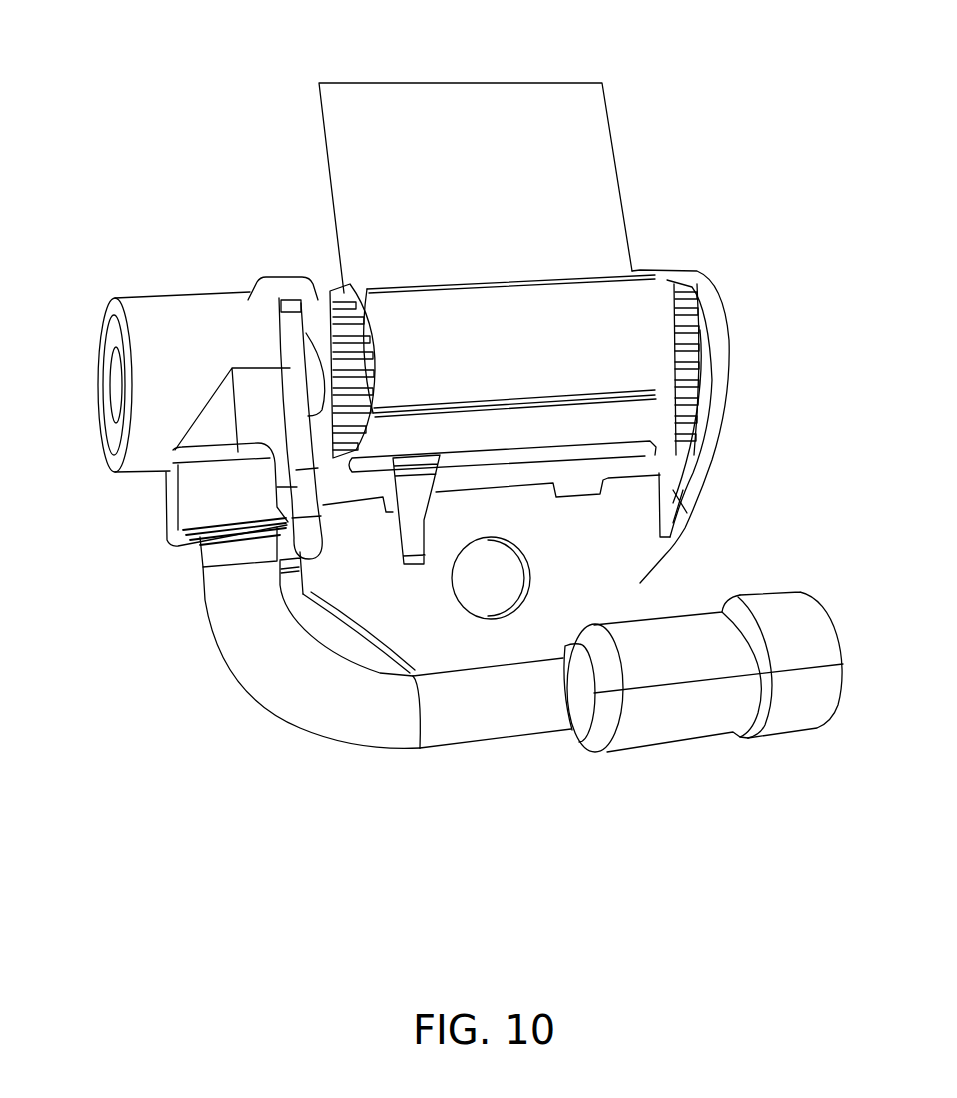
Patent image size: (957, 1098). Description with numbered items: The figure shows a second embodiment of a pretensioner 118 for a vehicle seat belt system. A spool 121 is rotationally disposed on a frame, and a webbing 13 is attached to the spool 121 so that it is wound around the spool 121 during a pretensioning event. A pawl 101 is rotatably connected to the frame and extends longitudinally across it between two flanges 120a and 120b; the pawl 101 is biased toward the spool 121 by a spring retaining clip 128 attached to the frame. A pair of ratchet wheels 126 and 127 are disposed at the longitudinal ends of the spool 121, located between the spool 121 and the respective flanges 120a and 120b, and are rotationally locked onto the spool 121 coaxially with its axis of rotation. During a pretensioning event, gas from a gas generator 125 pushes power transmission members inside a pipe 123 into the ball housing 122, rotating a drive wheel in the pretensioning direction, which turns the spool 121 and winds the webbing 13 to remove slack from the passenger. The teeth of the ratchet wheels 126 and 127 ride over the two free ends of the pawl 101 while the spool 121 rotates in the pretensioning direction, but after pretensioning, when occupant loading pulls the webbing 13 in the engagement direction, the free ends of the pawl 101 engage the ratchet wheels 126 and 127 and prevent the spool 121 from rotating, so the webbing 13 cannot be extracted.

The pretensioner 118 is at (108, 122).
The webbing 13 is at (595, 158).
The ball housing 122 is at (157, 333).
The flange 120a is at (285, 313).
The ratchet wheel 126 is at (336, 297).
The spool 121 is at (588, 407).
The ratchet wheel 127 is at (680, 290).
The flange 120b is at (713, 305).
The pawl 101 is at (623, 462).
The spring retaining clip 128 is at (413, 522).
The pipe 123 is at (278, 675).
The gas generator 125 is at (802, 647).